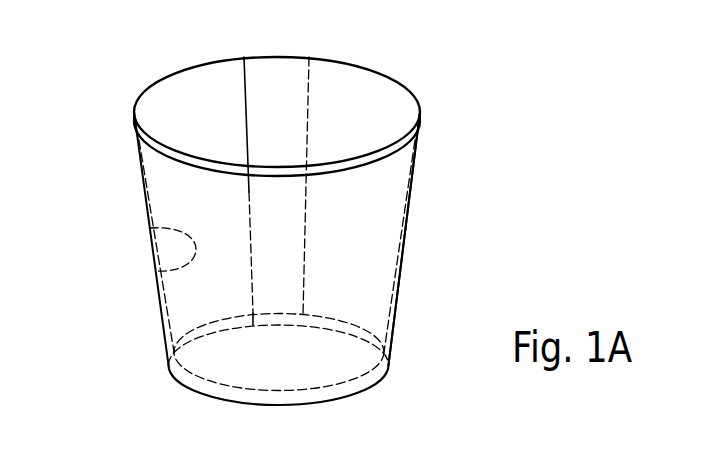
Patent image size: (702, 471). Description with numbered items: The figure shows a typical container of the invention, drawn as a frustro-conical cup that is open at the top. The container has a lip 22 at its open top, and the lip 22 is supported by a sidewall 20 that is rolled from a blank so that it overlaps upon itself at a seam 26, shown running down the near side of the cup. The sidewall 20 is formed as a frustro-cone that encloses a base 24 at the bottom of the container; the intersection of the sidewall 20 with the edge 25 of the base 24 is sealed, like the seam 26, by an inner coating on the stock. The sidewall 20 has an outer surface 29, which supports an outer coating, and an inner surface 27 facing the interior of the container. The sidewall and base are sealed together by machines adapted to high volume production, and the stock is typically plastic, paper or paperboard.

The sidewall 20 is at (357, 208).
The lip 22 is at (190, 151).
The base 24 is at (337, 360).
The edge 25 is at (352, 383).
The seam 26 is at (265, 85).
The inner surface 27 is at (157, 271).
The outer surface 29 is at (417, 155).